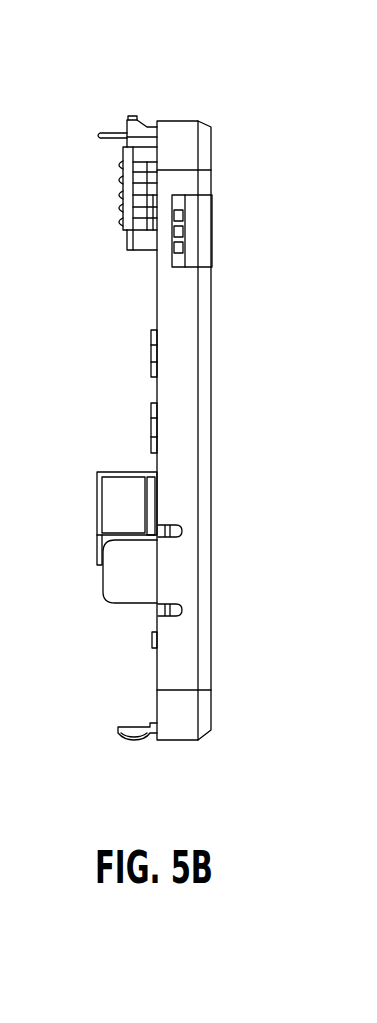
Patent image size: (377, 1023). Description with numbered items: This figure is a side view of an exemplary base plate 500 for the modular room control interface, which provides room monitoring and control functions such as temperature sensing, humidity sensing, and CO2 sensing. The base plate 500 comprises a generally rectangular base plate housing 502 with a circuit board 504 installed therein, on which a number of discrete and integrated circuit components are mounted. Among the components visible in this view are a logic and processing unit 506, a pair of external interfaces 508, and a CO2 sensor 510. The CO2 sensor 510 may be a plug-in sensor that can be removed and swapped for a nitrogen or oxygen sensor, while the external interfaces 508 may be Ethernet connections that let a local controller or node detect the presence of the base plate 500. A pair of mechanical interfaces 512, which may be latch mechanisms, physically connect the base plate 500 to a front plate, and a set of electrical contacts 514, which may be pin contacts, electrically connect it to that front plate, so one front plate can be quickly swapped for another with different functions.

The base plate 500 is at (164, 57).
The base plate housing 502 is at (170, 312).
The circuit board 504 is at (157, 455).
The logic and processing unit 506 is at (157, 665).
The external interfaces 508 is at (98, 505).
The CO2 sensor 510 is at (123, 172).
The mechanical interfaces 512 is at (133, 115).
The electrical contacts 514 is at (120, 222).